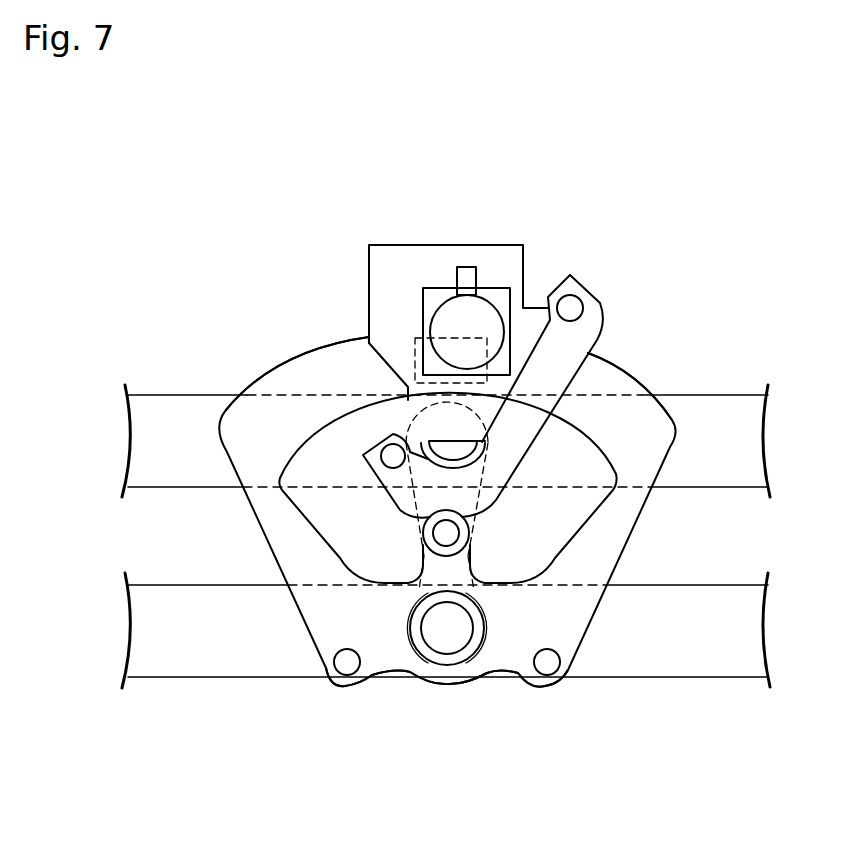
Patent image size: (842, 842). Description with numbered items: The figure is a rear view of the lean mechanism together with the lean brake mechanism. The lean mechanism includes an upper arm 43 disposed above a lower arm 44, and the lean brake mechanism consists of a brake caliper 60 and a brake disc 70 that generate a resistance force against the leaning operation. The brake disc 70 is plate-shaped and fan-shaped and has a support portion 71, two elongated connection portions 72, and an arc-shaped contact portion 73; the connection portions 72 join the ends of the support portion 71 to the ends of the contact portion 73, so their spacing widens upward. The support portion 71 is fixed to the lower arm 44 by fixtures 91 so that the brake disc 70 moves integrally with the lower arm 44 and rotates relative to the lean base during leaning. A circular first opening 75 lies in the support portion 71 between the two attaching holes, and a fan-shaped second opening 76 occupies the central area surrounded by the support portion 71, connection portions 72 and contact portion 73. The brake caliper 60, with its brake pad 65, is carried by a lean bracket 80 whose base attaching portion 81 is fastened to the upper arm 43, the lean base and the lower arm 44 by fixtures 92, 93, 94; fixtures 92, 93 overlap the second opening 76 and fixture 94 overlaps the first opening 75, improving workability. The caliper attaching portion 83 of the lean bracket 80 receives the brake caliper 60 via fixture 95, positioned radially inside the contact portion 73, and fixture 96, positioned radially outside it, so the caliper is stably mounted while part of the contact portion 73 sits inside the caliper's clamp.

The upper arm 43 is at (158, 407).
The lower arm 44 is at (173, 665).
The brake caliper 60 is at (347, 242).
The brake pad 65 is at (410, 358).
The brake disc 70 is at (253, 325).
The support portion 71 is at (393, 675).
The connection portion 72 is at (637, 508).
The contact portion 73 is at (291, 366).
The first opening 75 is at (447, 640).
The second opening 76 is at (283, 510).
The lean bracket 80 is at (366, 527).
The base attaching portion 81 is at (470, 545).
The caliper attaching portion 83 is at (570, 375).
The fixture 91 is at (345, 665).
The fixture 92 is at (468, 462).
The fixture 93 is at (442, 535).
The fixture 94 is at (457, 647).
The fixture 95 is at (383, 443).
The fixture 96 is at (577, 302).